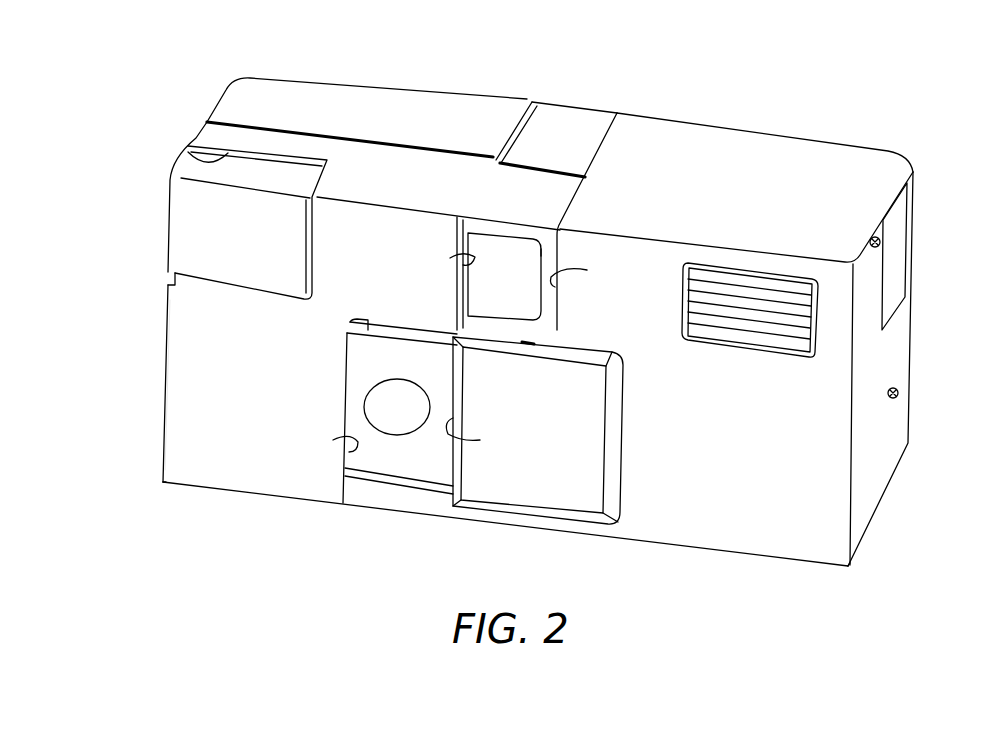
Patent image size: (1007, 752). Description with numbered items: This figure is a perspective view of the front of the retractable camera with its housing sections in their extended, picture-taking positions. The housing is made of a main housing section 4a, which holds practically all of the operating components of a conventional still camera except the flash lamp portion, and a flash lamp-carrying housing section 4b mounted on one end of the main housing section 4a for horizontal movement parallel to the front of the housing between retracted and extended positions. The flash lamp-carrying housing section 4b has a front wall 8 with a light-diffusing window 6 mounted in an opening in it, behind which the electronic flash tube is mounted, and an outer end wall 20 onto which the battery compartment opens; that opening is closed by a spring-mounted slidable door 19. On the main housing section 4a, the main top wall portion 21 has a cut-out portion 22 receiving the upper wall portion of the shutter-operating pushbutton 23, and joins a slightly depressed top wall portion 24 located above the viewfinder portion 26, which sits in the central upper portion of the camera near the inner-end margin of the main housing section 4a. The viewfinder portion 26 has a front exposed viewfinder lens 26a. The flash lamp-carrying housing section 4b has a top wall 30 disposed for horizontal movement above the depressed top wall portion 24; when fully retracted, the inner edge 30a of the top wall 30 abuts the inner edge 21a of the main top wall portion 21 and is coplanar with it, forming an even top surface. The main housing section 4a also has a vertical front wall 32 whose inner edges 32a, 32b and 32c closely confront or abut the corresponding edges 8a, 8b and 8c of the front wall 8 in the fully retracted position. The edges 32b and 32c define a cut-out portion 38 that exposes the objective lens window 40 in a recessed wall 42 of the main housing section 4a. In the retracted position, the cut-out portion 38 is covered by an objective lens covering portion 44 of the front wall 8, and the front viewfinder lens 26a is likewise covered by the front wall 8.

The main housing section 4a is at (163, 481).
The flash lamp-carrying housing section 4b is at (848, 567).
The light-diffusing window 6 is at (797, 327).
The front wall 8 is at (805, 480).
The edge of front wall 8a is at (590, 270).
The edge of front wall 8b is at (530, 343).
The edge of front wall 8c is at (479, 436).
The slidable door 19 is at (893, 243).
The outer end wall 20 is at (887, 362).
The main top wall portion 21 is at (338, 98).
The inner edge of top wall 21a is at (533, 100).
The cut-out portion 22 is at (190, 162).
The shutter-operating pushbutton 23 is at (205, 226).
The depressed top wall portion 24 is at (563, 135).
The viewfinder portion 26 is at (491, 289).
The front viewfinder lens 26a is at (530, 252).
The top wall 30 is at (723, 145).
The inner edge of top wall 30a is at (602, 127).
The vertical front wall 32 is at (205, 378).
The inner edge of front wall 32a is at (435, 257).
The inner edge of front wall 32b is at (377, 290).
The inner edge of front wall 32c is at (317, 438).
The cut-out portion 38 is at (437, 463).
The objective lens window 40 is at (398, 413).
The recessed wall 42 is at (367, 358).
The objective lens covering portion 44 is at (580, 437).